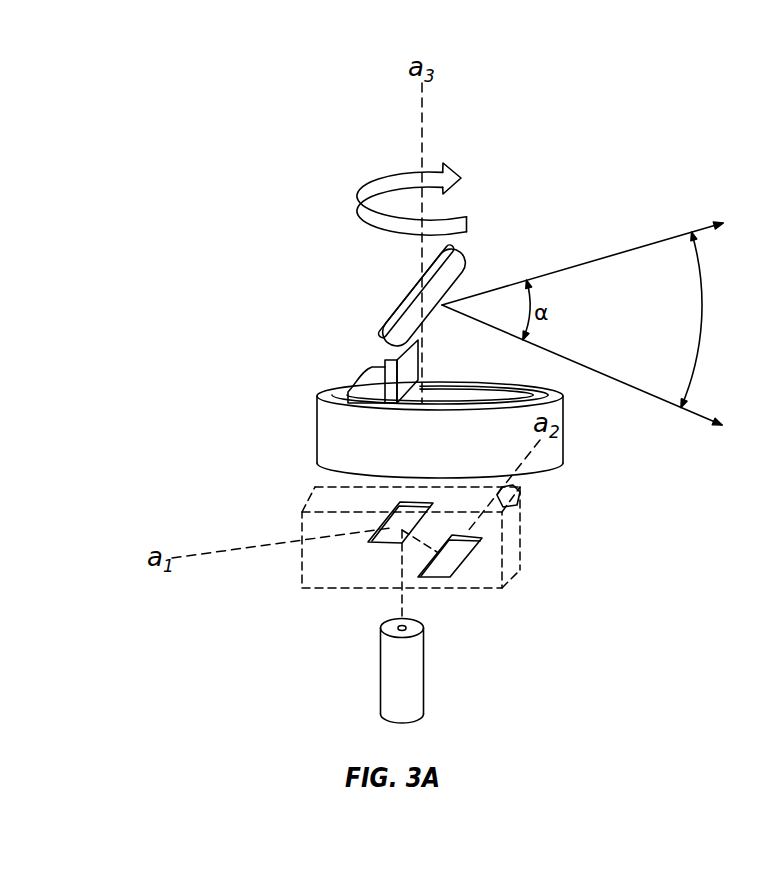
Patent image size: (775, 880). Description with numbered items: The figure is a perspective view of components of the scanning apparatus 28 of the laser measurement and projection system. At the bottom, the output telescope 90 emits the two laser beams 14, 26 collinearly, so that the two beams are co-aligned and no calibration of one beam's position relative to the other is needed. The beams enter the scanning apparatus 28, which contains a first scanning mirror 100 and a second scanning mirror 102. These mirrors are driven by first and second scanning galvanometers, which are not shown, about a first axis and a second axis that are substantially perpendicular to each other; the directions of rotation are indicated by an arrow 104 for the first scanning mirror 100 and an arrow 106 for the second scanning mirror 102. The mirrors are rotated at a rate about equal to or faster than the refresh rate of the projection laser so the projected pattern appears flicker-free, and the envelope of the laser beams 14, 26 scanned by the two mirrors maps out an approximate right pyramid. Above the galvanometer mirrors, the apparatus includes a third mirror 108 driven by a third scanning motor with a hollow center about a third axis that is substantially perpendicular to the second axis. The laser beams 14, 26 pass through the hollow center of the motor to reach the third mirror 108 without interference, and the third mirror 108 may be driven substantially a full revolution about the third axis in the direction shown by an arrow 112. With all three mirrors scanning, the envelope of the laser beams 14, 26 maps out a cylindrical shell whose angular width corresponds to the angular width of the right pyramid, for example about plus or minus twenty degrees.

The laser beam 14 is at (426, 351).
The laser beam 26 is at (405, 598).
The scanning apparatus 28 is at (494, 168).
The output telescope 90 is at (369, 678).
The first scanning mirror 100 is at (364, 554).
The second scanning mirror 102 is at (470, 567).
The arrow 104 is at (350, 527).
The arrow 106 is at (522, 492).
The third mirror 108 is at (474, 283).
The arrow 112 is at (356, 205).